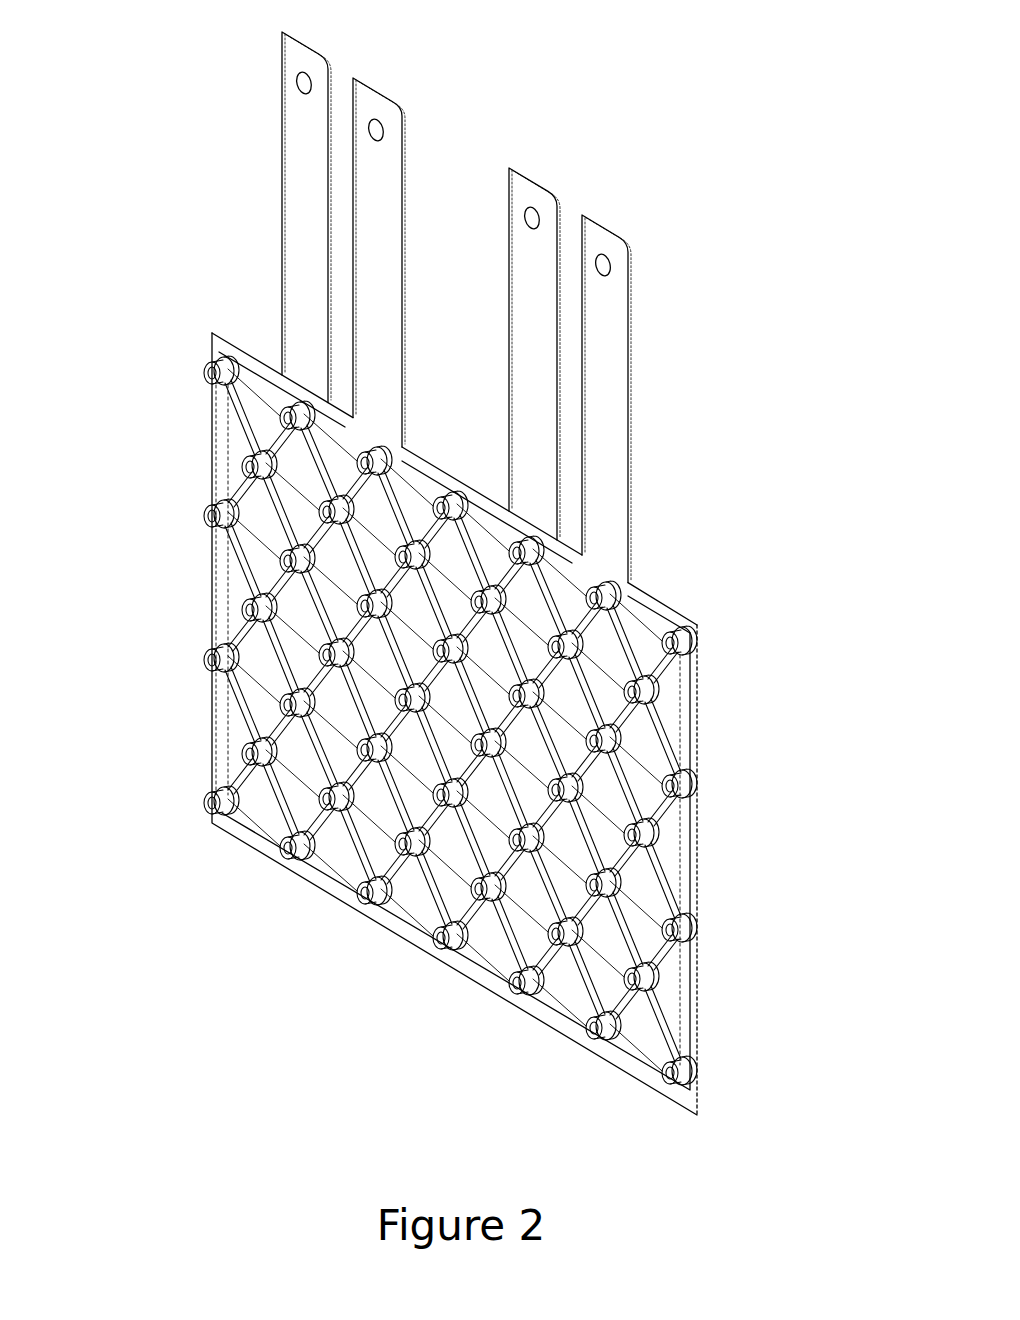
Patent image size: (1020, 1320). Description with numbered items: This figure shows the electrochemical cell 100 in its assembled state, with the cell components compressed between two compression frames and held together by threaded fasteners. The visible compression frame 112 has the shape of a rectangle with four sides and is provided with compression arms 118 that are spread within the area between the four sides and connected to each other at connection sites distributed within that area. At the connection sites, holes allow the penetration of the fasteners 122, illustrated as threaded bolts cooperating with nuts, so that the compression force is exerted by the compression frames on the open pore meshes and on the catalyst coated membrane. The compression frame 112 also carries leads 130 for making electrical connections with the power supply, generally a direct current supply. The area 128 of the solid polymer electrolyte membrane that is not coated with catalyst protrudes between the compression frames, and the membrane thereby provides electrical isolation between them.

The electrochemical cell 100 is at (505, 67).
The compression frame 112 is at (683, 993).
The compression arms 118 is at (243, 635).
The fasteners 122 is at (447, 800).
The area of the solid polymer electrolyte membrane 128 is at (660, 605).
The leads 130 is at (612, 225).